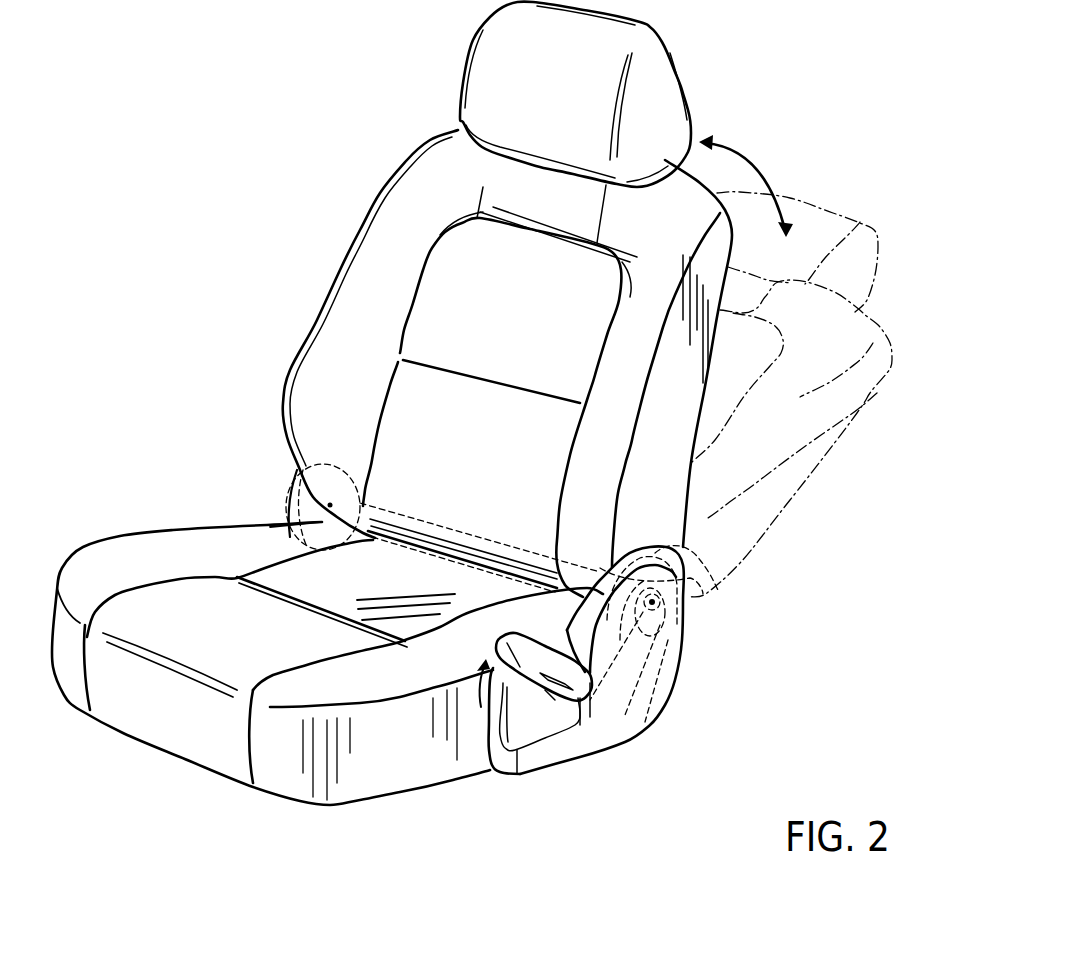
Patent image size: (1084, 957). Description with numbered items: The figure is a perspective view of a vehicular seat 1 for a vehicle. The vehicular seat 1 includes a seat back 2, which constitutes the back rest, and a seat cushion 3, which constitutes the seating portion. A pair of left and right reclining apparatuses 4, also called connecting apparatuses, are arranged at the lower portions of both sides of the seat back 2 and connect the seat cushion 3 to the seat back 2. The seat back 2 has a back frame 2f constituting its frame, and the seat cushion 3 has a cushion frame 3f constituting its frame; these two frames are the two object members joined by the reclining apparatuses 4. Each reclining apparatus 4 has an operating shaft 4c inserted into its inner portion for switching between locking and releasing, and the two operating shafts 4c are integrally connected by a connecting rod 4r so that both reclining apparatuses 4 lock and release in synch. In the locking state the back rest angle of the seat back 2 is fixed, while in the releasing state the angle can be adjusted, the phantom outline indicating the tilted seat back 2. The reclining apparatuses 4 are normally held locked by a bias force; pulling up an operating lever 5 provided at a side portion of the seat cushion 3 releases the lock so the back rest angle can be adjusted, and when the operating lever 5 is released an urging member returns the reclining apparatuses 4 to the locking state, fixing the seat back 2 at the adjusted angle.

The vehicular seat 1 is at (324, 161).
The seat back 2 is at (480, 363).
The back frame 2f is at (377, 281).
The seat cushion 3 is at (327, 640).
The cushion frame 3f is at (142, 562).
The reclining apparatus 4 is at (332, 470).
The operating shaft 4c is at (332, 504).
The connecting rod 4r is at (455, 545).
The operating lever 5 is at (522, 653).